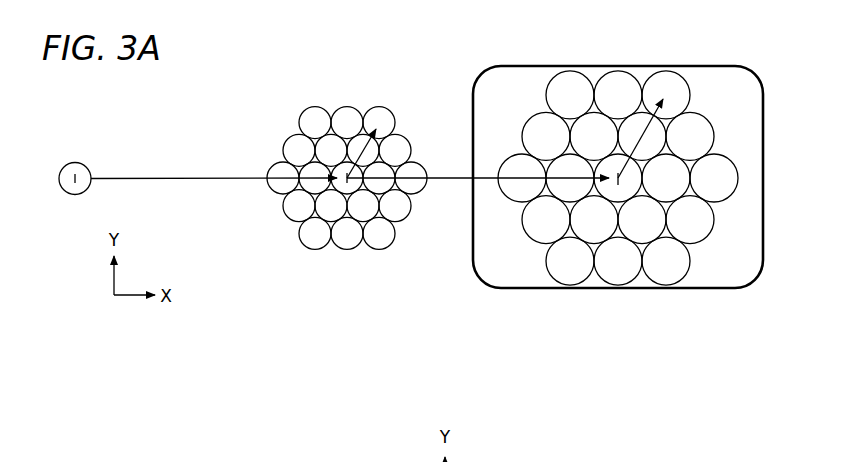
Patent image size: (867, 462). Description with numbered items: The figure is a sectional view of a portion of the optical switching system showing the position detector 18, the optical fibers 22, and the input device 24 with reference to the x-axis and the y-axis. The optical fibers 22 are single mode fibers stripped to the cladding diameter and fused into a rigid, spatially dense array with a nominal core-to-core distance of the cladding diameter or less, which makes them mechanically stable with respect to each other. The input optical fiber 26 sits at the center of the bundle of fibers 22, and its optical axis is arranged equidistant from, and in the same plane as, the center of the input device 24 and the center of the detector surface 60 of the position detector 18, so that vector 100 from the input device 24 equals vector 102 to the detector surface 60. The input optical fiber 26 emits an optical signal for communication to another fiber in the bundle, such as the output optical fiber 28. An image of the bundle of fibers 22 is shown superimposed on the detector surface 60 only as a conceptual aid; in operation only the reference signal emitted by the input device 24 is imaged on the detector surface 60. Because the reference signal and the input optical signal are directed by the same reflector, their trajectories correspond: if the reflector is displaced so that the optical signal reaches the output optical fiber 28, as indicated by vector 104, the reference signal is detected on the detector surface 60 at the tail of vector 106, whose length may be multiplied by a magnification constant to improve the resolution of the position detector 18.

The position detector 18 is at (677, 60).
The optical fibers 22 is at (305, 98).
The input device 24 is at (75, 162).
The input optical fiber 26 is at (355, 184).
The output optical fiber 28 is at (378, 107).
The detector surface 60 is at (710, 272).
The vector 100 is at (158, 177).
The vector 102 is at (450, 176).
The vector 104 is at (382, 150).
The vector 106 is at (642, 123).